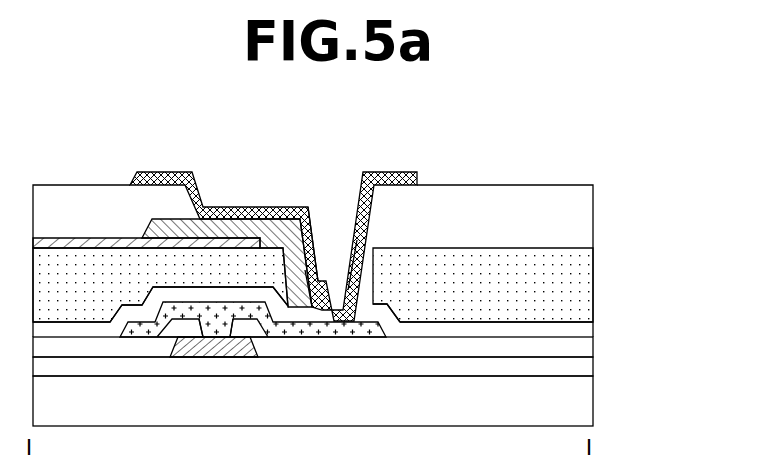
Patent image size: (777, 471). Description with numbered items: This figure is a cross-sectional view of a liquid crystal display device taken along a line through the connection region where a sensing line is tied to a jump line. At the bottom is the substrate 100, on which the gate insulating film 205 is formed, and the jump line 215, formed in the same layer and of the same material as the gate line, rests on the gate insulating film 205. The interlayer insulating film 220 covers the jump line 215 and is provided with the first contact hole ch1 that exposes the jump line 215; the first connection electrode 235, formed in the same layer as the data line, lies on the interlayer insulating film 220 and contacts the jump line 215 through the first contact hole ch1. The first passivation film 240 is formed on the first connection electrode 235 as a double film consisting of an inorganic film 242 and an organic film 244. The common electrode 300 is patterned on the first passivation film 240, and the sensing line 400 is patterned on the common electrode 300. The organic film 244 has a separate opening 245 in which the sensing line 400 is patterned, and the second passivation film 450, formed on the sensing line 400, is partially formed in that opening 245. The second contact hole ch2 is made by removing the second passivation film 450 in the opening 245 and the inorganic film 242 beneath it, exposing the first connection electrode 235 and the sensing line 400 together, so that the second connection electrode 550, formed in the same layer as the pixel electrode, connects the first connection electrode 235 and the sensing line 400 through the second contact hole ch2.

The substrate 100 is at (587, 398).
The gate insulating film 205 is at (587, 368).
The jump line 215 is at (214, 350).
The interlayer insulating film 220 is at (587, 350).
The first connection electrode 235 is at (147, 330).
The first passivation film 240 is at (399, 290).
The inorganic film 242 is at (587, 327).
The organic film 244 is at (587, 268).
The opening 245 is at (367, 299).
The common electrode 300 is at (78, 247).
The sensing line 400 is at (207, 219).
The second passivation film 450 is at (587, 222).
The second connection electrode 550 is at (388, 172).
The first contact hole ch1 is at (232, 340).
The second contact hole ch2 is at (315, 228).